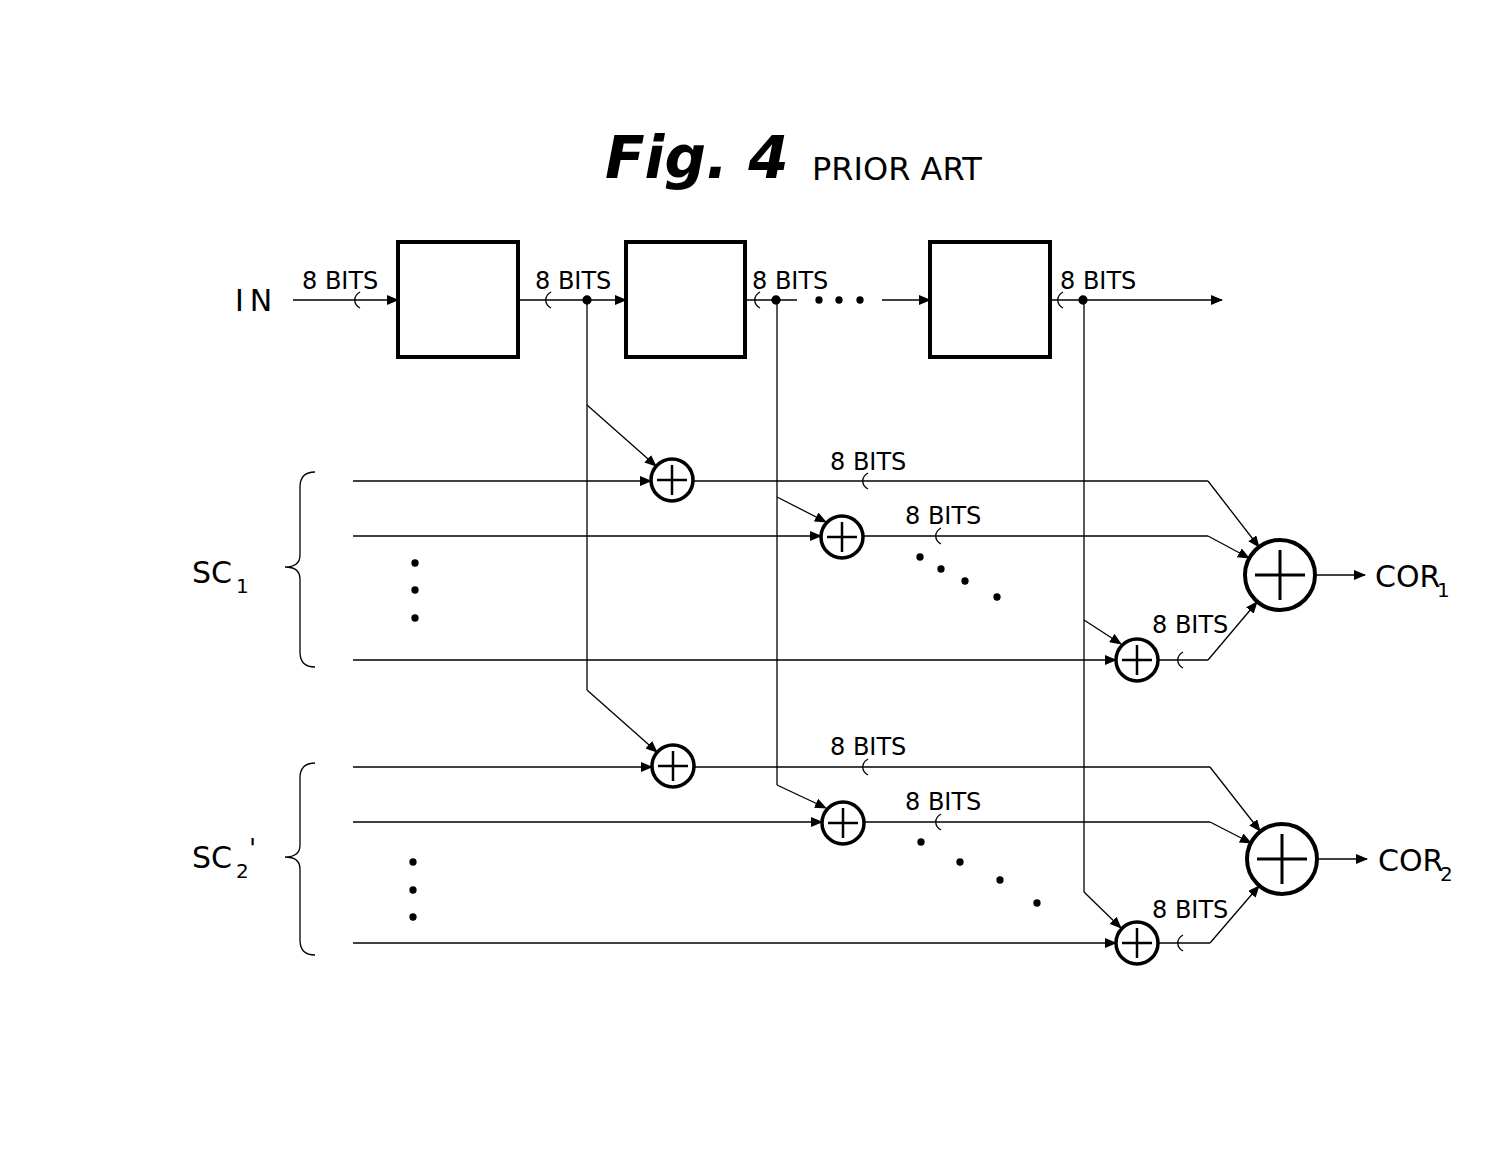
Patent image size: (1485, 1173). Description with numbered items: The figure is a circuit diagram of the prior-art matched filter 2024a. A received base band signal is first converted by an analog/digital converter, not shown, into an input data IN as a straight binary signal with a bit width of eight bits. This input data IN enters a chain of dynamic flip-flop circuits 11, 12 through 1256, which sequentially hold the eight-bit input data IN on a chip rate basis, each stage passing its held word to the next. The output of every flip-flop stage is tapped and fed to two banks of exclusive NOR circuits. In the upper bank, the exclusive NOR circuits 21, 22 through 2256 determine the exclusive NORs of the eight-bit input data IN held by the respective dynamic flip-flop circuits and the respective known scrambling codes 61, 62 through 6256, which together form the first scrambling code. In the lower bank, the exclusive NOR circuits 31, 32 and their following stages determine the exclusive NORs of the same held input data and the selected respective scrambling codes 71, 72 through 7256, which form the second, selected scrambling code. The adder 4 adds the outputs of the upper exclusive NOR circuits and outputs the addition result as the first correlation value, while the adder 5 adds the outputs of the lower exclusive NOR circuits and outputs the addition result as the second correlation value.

The dynamic flip-flop circuit 11 is at (477, 358).
The dynamic flip-flop circuit 12 is at (660, 358).
The dynamic flip-flop circuit 1256 is at (995, 358).
The exclusive NOR circuit 21 is at (686, 463).
The exclusive NOR circuit 22 is at (850, 557).
The exclusive NOR circuit 2256 is at (1152, 673).
The exclusive NOR circuit 31 is at (685, 749).
The exclusive NOR circuit 32 is at (850, 843).
The adder 4 is at (1287, 540).
The adder 5 is at (1290, 895).
The known scrambling code 61 is at (378, 481).
The known scrambling code 62 is at (372, 536).
The known scrambling code 6256 is at (445, 660).
The selected scrambling code 71 is at (440, 767).
The selected scrambling code 72 is at (437, 822).
The selected scrambling code 7256 is at (445, 943).
The matched filter 2024a is at (1235, 188).